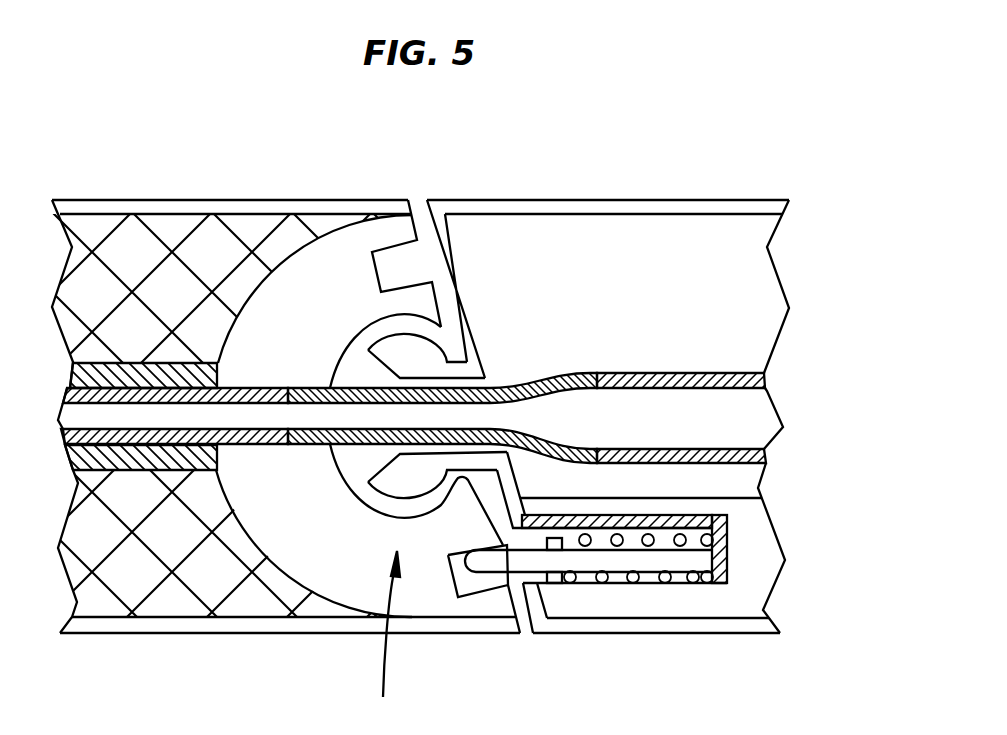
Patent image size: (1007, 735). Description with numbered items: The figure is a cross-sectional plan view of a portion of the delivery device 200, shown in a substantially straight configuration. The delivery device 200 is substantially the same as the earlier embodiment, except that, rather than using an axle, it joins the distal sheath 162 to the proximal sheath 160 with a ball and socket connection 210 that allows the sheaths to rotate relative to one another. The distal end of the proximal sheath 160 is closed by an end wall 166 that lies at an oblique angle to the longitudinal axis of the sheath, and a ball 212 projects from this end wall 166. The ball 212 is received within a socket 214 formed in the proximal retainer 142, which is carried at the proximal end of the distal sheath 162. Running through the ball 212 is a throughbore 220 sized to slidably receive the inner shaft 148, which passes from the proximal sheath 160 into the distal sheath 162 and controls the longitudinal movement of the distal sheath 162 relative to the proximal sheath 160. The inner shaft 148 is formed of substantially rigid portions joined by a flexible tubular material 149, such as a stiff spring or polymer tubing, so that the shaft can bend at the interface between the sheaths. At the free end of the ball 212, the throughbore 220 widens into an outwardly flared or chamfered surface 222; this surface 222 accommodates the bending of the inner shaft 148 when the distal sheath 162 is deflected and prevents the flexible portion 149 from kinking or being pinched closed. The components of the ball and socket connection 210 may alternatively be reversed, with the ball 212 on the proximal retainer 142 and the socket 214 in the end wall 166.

The delivery device 200 is at (669, 99).
The socket 214 is at (358, 375).
The end wall 166 is at (458, 295).
The ball 212 is at (408, 360).
The flexible tubular material 149 is at (527, 380).
The inner shaft 148 is at (710, 370).
The throughbore 220 is at (493, 449).
The chamfered surface 222 is at (368, 484).
The distal sheath 162 is at (170, 625).
The proximal retainer 142 is at (338, 563).
The ball and socket connection 210 is at (392, 642).
The proximal sheath 160 is at (643, 625).